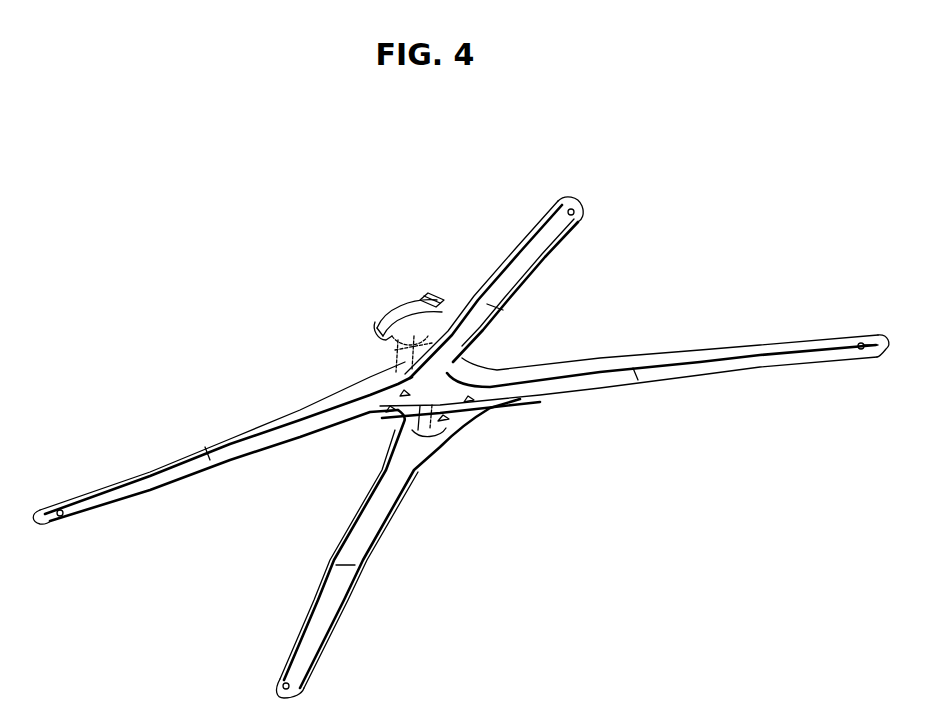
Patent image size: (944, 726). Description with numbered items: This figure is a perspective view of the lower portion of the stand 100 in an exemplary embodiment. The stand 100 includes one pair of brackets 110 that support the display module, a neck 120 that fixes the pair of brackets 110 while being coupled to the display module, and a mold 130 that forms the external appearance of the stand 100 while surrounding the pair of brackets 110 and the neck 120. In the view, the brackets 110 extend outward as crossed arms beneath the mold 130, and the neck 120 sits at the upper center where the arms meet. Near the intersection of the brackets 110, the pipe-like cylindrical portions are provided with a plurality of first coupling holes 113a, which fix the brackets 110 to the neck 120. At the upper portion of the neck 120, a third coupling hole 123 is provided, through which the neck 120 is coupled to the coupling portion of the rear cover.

The stand 100 is at (454, 157).
The bracket 110 is at (557, 398).
The first coupling hole 113a is at (440, 447).
The neck 120 is at (410, 297).
The third coupling hole 123 is at (427, 297).
The mold 130 is at (604, 358).